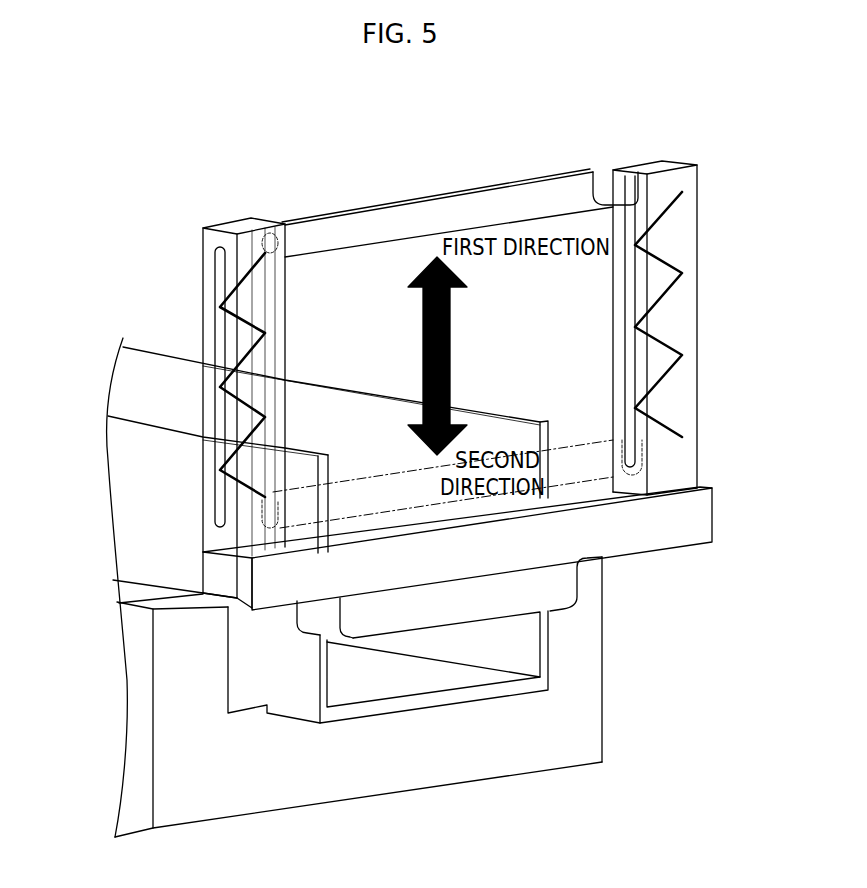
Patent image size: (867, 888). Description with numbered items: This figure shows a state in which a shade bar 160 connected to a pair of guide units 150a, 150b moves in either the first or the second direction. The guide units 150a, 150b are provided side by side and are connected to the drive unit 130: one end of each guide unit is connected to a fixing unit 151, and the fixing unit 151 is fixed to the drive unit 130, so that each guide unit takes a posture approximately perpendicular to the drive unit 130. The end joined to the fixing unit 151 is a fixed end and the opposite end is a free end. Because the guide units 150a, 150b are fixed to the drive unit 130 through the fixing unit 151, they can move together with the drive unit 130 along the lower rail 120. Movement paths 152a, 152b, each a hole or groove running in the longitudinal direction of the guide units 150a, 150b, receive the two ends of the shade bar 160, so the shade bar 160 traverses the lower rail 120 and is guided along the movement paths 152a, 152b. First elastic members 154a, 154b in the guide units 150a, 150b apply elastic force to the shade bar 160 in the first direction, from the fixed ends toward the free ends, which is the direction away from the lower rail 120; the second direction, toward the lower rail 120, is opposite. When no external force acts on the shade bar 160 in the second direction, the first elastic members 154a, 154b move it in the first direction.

The lower rail 120 is at (412, 758).
The drive unit 130 is at (517, 638).
The guide unit 150a is at (687, 322).
The guide unit 150b is at (208, 490).
The fixing unit 151 is at (702, 517).
The movement path 152a is at (594, 178).
The movement path 152b is at (218, 268).
The first elastic member 154a is at (673, 256).
The first elastic member 154b is at (234, 323).
The shade bar 160 is at (458, 210).